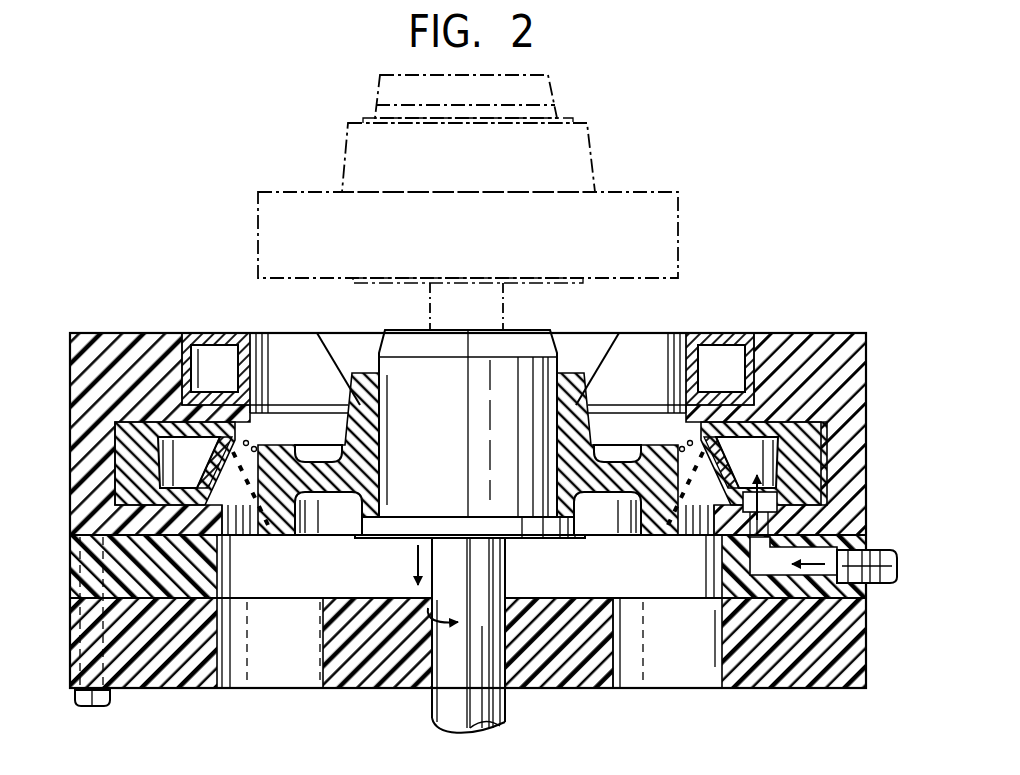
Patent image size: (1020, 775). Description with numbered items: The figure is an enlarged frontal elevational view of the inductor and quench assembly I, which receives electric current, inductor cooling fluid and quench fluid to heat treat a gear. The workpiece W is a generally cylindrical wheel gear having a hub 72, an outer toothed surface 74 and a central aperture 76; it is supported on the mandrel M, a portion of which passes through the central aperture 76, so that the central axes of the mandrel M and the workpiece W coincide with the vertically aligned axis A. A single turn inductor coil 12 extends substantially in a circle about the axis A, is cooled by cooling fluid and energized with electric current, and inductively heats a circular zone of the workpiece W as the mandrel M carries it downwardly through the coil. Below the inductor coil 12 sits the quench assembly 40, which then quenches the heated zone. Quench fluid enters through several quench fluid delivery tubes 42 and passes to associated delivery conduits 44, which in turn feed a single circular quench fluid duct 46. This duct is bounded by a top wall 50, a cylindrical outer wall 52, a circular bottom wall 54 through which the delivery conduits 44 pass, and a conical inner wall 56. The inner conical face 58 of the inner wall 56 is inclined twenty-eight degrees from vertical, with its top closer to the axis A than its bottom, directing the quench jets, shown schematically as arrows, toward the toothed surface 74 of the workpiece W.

The inductor coil 12 is at (215, 333).
The quench assembly 40 is at (108, 442).
The quench fluid delivery tube 42 is at (876, 588).
The delivery conduit 44 is at (748, 540).
The quench fluid duct 46 is at (767, 443).
The top wall 50 is at (170, 422).
The cylindrical outer wall 52 is at (813, 482).
The circular bottom wall 54 is at (151, 598).
The conical inner wall 56 is at (222, 440).
The inner conical face 58 is at (245, 505).
The hub 72 is at (598, 137).
The toothed surface 74 is at (685, 206).
The central aperture 76 is at (560, 380).
The mandrel M is at (385, 110).
The workpiece W is at (640, 185).
The axis A is at (470, 312).
The inductor and quench assembly I is at (775, 312).